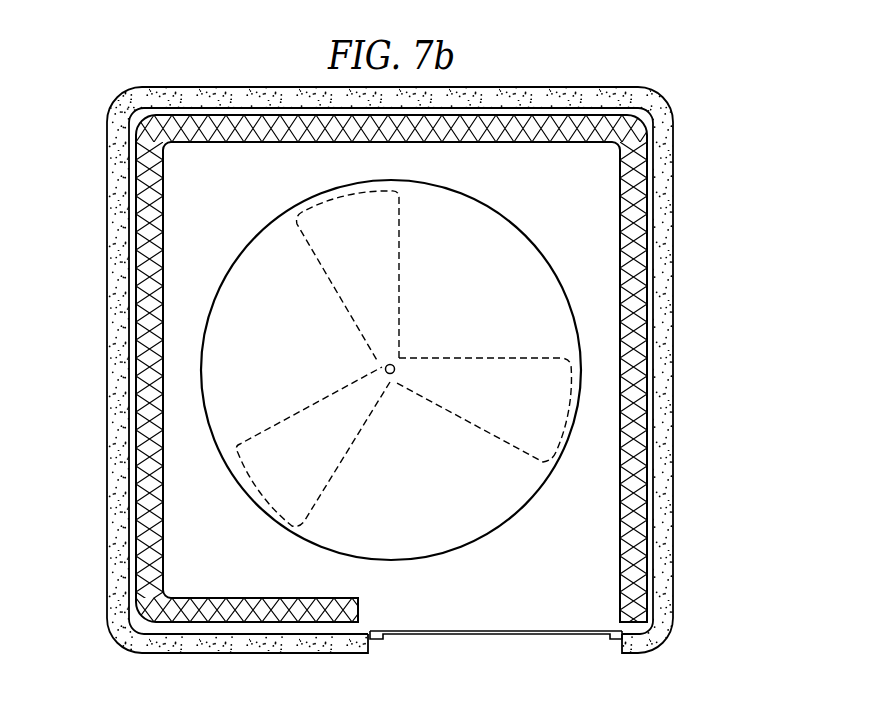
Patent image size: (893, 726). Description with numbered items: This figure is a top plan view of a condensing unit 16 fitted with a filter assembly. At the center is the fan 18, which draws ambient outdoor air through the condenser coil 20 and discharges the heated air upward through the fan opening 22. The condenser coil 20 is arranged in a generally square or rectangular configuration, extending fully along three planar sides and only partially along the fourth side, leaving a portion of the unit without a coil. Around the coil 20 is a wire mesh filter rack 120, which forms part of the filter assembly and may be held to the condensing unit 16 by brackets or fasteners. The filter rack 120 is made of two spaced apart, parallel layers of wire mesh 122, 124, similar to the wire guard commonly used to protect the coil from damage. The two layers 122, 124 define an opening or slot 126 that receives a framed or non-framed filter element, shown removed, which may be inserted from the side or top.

The condensing unit 16 is at (409, 370).
The fan 18 is at (340, 298).
The condenser coil 20 is at (215, 598).
The fan opening 22 is at (473, 312).
The wire mesh filter rack 120 is at (664, 206).
The wire mesh layer 122 is at (655, 332).
The wire mesh layer 124 is at (668, 489).
The opening or slot 126 is at (369, 646).